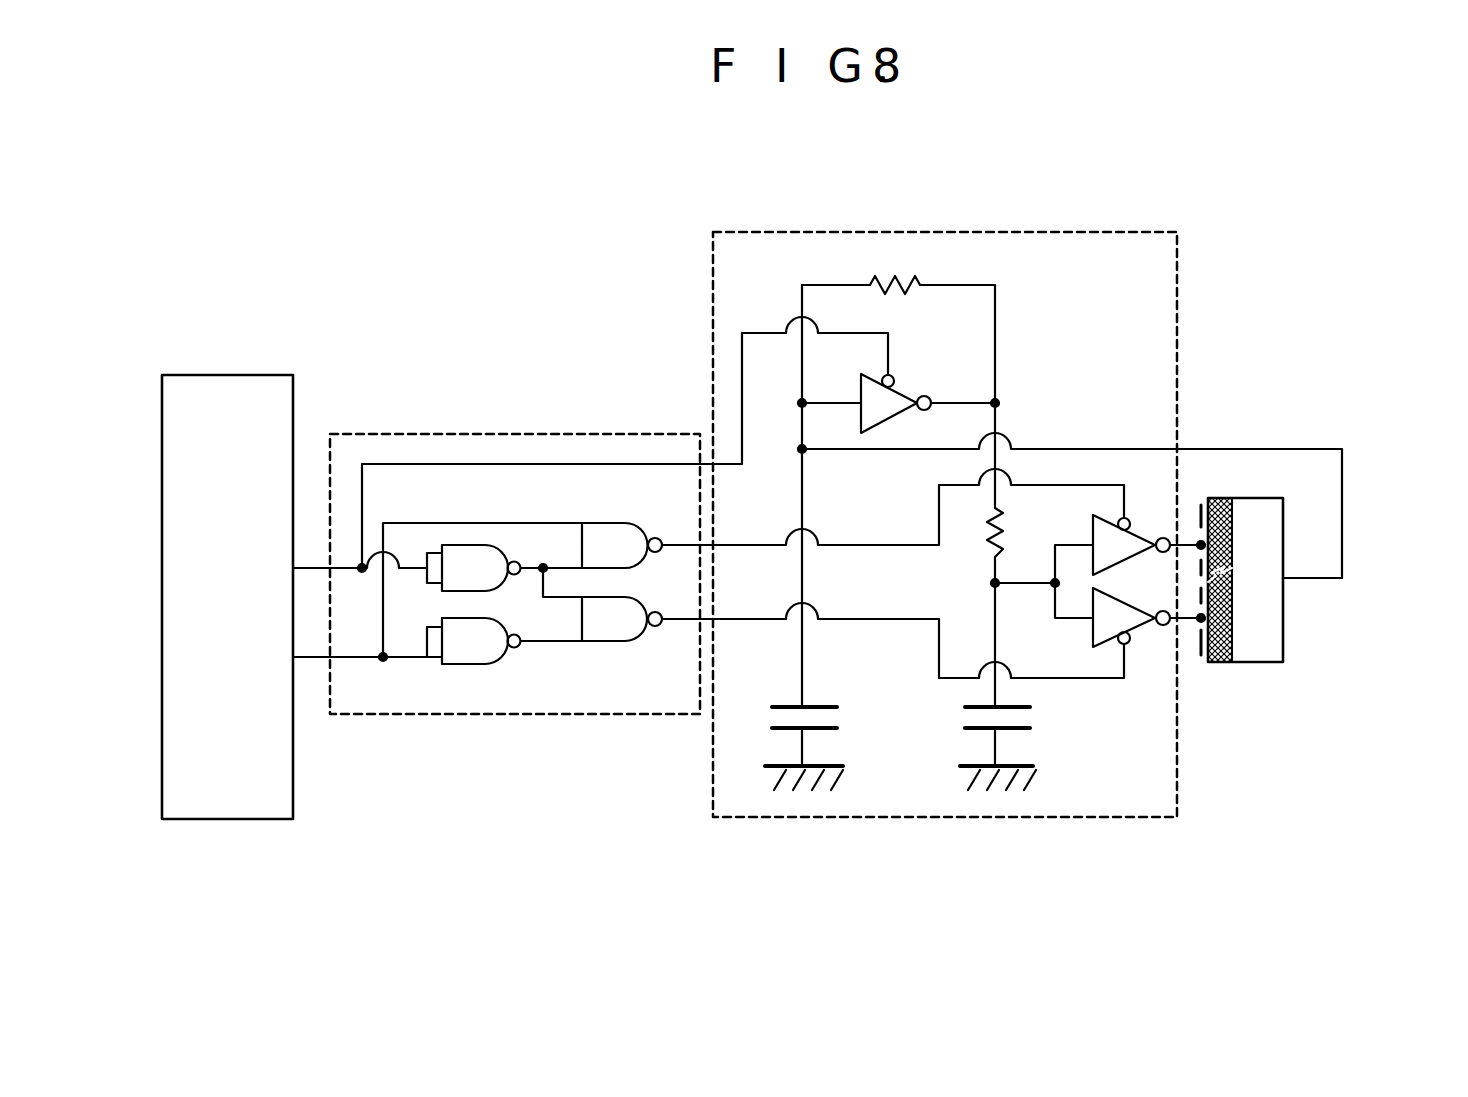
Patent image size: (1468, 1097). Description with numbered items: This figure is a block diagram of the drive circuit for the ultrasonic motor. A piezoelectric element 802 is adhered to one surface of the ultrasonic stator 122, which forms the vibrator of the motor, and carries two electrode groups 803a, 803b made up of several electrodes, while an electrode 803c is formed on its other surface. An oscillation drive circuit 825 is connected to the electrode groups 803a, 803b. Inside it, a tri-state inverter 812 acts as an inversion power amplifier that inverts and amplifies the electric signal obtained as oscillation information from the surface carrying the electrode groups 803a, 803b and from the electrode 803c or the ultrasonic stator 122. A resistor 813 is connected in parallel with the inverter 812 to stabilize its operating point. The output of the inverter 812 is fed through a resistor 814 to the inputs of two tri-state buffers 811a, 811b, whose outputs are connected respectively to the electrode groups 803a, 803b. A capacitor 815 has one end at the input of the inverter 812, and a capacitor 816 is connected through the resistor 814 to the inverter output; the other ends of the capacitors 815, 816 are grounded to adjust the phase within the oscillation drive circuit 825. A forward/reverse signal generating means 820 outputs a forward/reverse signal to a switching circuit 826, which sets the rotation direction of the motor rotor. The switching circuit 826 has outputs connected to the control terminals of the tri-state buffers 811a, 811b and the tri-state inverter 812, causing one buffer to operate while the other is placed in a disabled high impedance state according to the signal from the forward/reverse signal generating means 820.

The forward/reverse signal generating means 820 is at (236, 375).
The switching circuit 826 is at (470, 434).
The oscillation drive circuit 825 is at (862, 232).
The inverter 812 is at (905, 388).
The resistor 813 is at (893, 293).
The resistor 814 is at (988, 548).
The capacitor 815 is at (780, 732).
The capacitor 816 is at (975, 732).
The tri-state buffer 811a is at (1146, 527).
The tri-state buffer 811b is at (1148, 648).
The ultrasonic stator 122 is at (1268, 624).
The piezoelectric element 802 is at (1232, 572).
The electrode group 803a is at (1200, 514).
The electrode group 803b is at (1200, 648).
The electrode 803c is at (1232, 528).